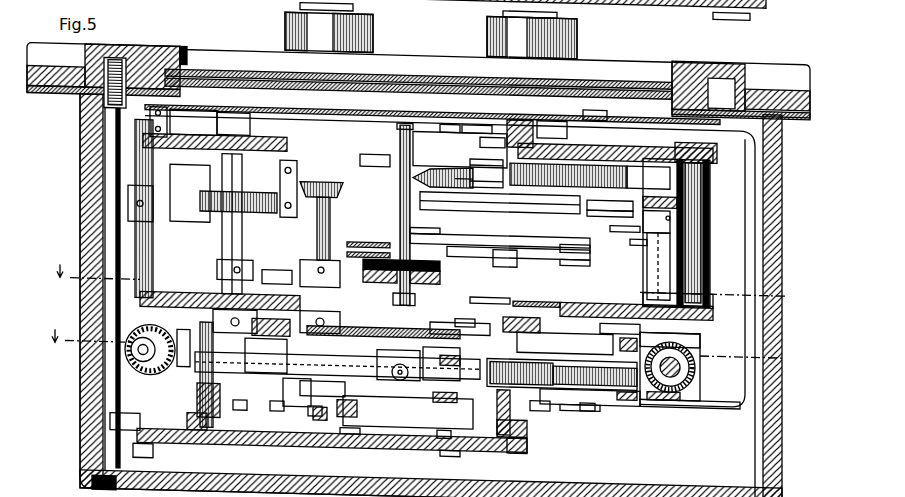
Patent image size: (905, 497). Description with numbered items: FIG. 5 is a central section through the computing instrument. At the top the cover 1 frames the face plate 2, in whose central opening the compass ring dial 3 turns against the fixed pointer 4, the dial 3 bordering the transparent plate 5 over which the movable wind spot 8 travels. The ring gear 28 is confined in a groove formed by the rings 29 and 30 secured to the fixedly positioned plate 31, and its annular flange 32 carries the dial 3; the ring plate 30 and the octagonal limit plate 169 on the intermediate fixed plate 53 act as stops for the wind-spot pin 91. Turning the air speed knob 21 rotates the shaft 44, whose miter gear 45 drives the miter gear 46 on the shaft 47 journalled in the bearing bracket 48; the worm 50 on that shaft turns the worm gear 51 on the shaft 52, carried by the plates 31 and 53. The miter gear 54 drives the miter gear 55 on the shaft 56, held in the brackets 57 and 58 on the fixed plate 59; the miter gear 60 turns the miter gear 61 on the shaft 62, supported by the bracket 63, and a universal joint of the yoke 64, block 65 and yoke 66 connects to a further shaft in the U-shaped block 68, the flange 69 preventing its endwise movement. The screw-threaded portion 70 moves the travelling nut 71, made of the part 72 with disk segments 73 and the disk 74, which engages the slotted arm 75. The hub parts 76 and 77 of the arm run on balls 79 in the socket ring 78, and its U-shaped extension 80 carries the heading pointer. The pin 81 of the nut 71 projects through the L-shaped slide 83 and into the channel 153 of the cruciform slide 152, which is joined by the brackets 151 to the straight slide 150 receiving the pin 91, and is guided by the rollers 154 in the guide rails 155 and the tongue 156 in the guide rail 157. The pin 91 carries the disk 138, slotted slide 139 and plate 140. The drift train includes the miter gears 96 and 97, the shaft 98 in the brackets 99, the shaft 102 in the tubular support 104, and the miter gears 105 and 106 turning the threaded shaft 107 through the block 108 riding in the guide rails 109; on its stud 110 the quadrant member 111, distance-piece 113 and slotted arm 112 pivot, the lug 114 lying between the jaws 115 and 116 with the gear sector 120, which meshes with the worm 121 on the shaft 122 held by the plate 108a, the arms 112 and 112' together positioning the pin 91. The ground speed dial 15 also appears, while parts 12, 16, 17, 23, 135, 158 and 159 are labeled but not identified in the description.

The cover 1 is at (163, 59).
The face plate 2 is at (188, 100).
The compass ring dial 3 is at (282, 76).
The fixed pointer 4 is at (587, 95).
The transparent plate 5 is at (480, 126).
The movable spot 8 is at (407, 115).
The lever 12 is at (520, 293).
The ground speed dial 15 is at (82, 104).
The section line 16 is at (416, 286).
The section line 17 is at (410, 348).
The air speed knob 21 is at (298, 9).
The post 23 is at (560, 4).
The ring gear 28 is at (240, 126).
The ring 29 is at (448, 133).
The ring plate 30 is at (467, 120).
The fixedly positioned plate 31 is at (705, 140).
The annular flange 32 is at (251, 99).
The shaft 44 is at (330, 219).
The miter gear 45 is at (335, 188).
The companion miter gear 46 is at (303, 194).
The shaft 47 is at (200, 214).
The bearing bracket 48 is at (280, 242).
The worm 50 is at (222, 214).
The worm gear 51 is at (192, 193).
The shaft 52 is at (252, 264).
The intermediate fixed plate 53 is at (192, 296).
The miter gear 54 is at (380, 356).
The miter gear 55 is at (322, 352).
The shaft 56 is at (212, 318).
The bearing bracket 57 is at (270, 397).
The bearing bracket 58 is at (184, 446).
The fixed plate 59 is at (234, 445).
The miter gear 60 is at (130, 336).
The companion miter gear 61 is at (160, 373).
The shaft 62 is at (250, 372).
The bearing bracket 63 is at (215, 395).
The yoke 64 is at (408, 412).
The block 65 is at (429, 388).
The yoke 66 is at (440, 397).
The U-shaped block 68 is at (440, 433).
The flange 69 is at (450, 445).
The screw-threaded portion 70 is at (610, 396).
The travelling nut 71 is at (565, 358).
The nut part 72 is at (580, 409).
The disk segments 73 is at (550, 392).
The disk 74 is at (540, 400).
The slotted arm 75 is at (590, 412).
The hub part 76 is at (333, 404).
The hub part 77 is at (348, 440).
The outer socket ring 78 is at (516, 438).
The balls 79 is at (500, 446).
The U-shaped extension 80 is at (720, 394).
The pin 81 is at (510, 324).
The L-shaped slide 83 is at (415, 358).
The wind-spot pin 91 is at (443, 172).
The miter gear 96 is at (690, 328).
The miter gear 97 is at (695, 344).
The shaft 98 is at (695, 357).
The bearing brackets 99 is at (690, 372).
The shaft 102 is at (652, 243).
The tubular support 104 is at (652, 268).
The miter gear 105 is at (652, 198).
The miter gear 106 is at (655, 180).
The shaft 107 is at (611, 226).
The slidable block 108 is at (500, 160).
The plate 108a is at (456, 170).
The guide rails 109 is at (606, 180).
The stud 110 is at (557, 129).
The quadrant-shaped member 111 is at (629, 239).
The slotted arm 112 is at (518, 265).
The slotted arm 112' is at (367, 244).
The distance-piece 113 is at (580, 240).
The lug 114 is at (483, 205).
The jaw 115 is at (587, 218).
The jaw 116 is at (540, 208).
The gear sector 120 is at (520, 240).
The worm 121 is at (425, 236).
The shaft 122 is at (586, 240).
The bearing 135 is at (380, 160).
The disk 138 is at (440, 258).
The slotted slide 139 is at (440, 270).
The plate 140 is at (440, 278).
The straight slide 150 is at (485, 290).
The brackets 151 is at (402, 316).
The cruciform slide 152 is at (620, 346).
The channel 153 is at (560, 300).
The rollers 154 is at (383, 317).
The guide rails 155 is at (368, 318).
The tongue 156 is at (600, 318).
The guide rail 157 is at (652, 282).
The block 158 is at (280, 277).
The plate 159 is at (200, 285).
The octagonal limit plate 169 is at (465, 315).